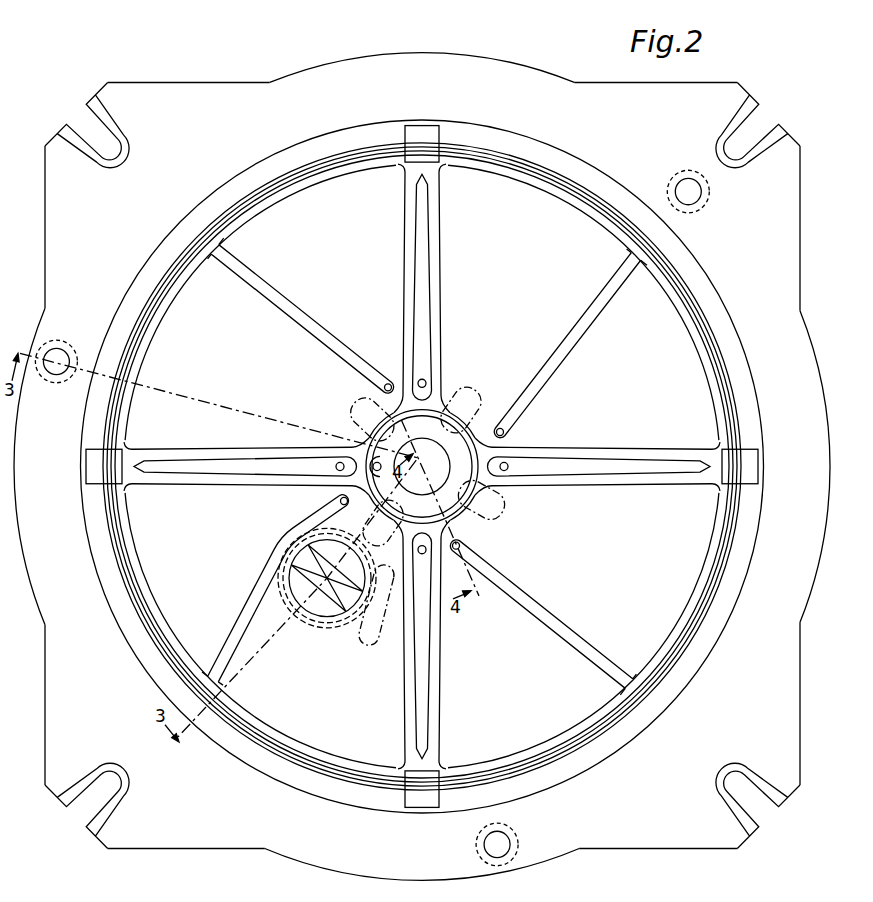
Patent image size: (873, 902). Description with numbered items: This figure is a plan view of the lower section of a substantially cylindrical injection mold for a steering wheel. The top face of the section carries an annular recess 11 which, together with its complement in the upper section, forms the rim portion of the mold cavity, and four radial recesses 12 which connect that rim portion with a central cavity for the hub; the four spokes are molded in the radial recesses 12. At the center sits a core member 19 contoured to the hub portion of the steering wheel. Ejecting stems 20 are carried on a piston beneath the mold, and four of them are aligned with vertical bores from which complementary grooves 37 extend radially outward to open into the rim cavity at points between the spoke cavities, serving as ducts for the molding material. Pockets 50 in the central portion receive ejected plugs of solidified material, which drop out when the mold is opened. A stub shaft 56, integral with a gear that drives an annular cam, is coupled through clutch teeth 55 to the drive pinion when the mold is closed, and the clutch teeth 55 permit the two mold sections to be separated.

The annular recesses 11 is at (605, 212).
The radial recesses 12 is at (424, 268).
The core member 19 is at (437, 448).
The ejecting stems 20 is at (426, 385).
The complementary grooves 37 is at (290, 316).
The pockets 50 is at (345, 408).
The clutch teeth 55 is at (330, 596).
The stub shaft 56 is at (292, 580).